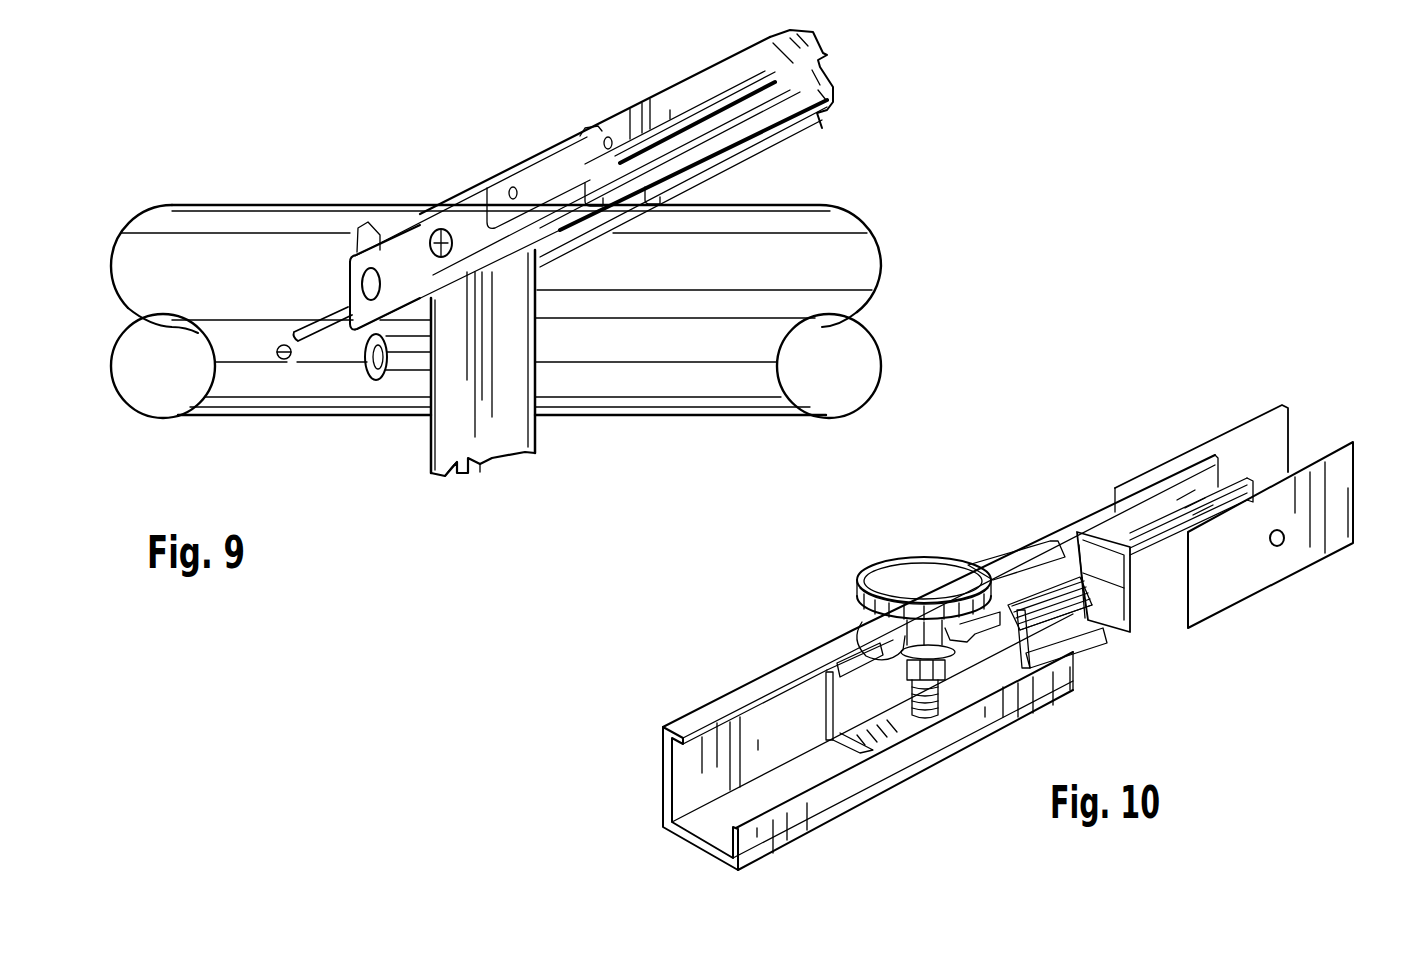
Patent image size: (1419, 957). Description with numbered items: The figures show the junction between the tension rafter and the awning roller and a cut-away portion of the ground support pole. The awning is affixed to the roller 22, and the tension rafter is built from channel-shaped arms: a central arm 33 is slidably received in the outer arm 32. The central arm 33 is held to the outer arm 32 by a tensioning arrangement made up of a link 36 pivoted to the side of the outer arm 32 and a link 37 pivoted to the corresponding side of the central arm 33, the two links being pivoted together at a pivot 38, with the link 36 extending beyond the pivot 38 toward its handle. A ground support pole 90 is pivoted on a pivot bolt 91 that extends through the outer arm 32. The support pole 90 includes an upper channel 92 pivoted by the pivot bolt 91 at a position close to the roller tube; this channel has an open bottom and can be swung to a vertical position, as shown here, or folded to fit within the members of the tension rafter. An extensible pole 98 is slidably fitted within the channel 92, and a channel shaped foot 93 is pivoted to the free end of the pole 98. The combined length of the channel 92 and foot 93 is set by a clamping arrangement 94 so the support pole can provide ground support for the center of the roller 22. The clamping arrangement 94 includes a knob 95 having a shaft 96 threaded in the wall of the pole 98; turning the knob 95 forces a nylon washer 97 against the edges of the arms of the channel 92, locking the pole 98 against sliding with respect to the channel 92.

In FIG. 9, the roller 22 is at (240, 410).
In FIG. 9, the outer arm 32 is at (423, 230).
In FIG. 9, the central arm 33 is at (727, 157).
In FIG. 9, the link 36 is at (572, 150).
In FIG. 9, the link 37 is at (823, 106).
In FIG. 9, the pivot 38 is at (620, 122).
In FIG. 9, the ground support pole 90 is at (450, 420).
In FIG. 9, the pivot bolt 91 is at (352, 263).
In FIG. 9, the upper channel 92 is at (505, 457).
In FIG. 10, the upper channel 92 is at (820, 808).
In FIG. 10, the channel shaped foot 93 is at (1243, 572).
In FIG. 10, the clamping arrangement 94 is at (878, 525).
In FIG. 10, the knob 95 is at (920, 575).
In FIG. 10, the shaft 96 is at (917, 705).
In FIG. 10, the nylon washer 97 is at (872, 638).
In FIG. 10, the extensible pole 98 is at (1115, 630).